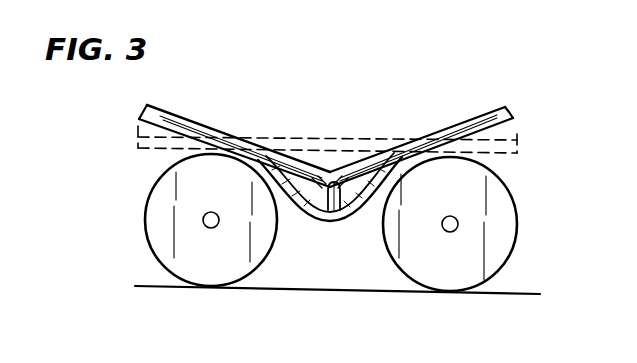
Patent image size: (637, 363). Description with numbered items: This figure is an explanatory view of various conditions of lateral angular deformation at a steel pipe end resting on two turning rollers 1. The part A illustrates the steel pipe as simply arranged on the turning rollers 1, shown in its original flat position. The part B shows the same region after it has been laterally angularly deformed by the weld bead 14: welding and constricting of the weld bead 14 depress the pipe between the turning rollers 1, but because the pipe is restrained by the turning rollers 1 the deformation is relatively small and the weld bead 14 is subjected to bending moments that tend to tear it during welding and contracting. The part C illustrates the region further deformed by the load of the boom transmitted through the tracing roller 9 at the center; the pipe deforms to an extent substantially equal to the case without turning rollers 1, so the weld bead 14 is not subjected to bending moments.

The turning rollers 1 is at (160, 213).
The tracing roller 9 is at (323, 204).
The weld bead 14 is at (336, 163).
The undeformed steel pipe part A is at (383, 147).
The laterally angularly deformed part B is at (291, 163).
The further deformed part C is at (298, 203).